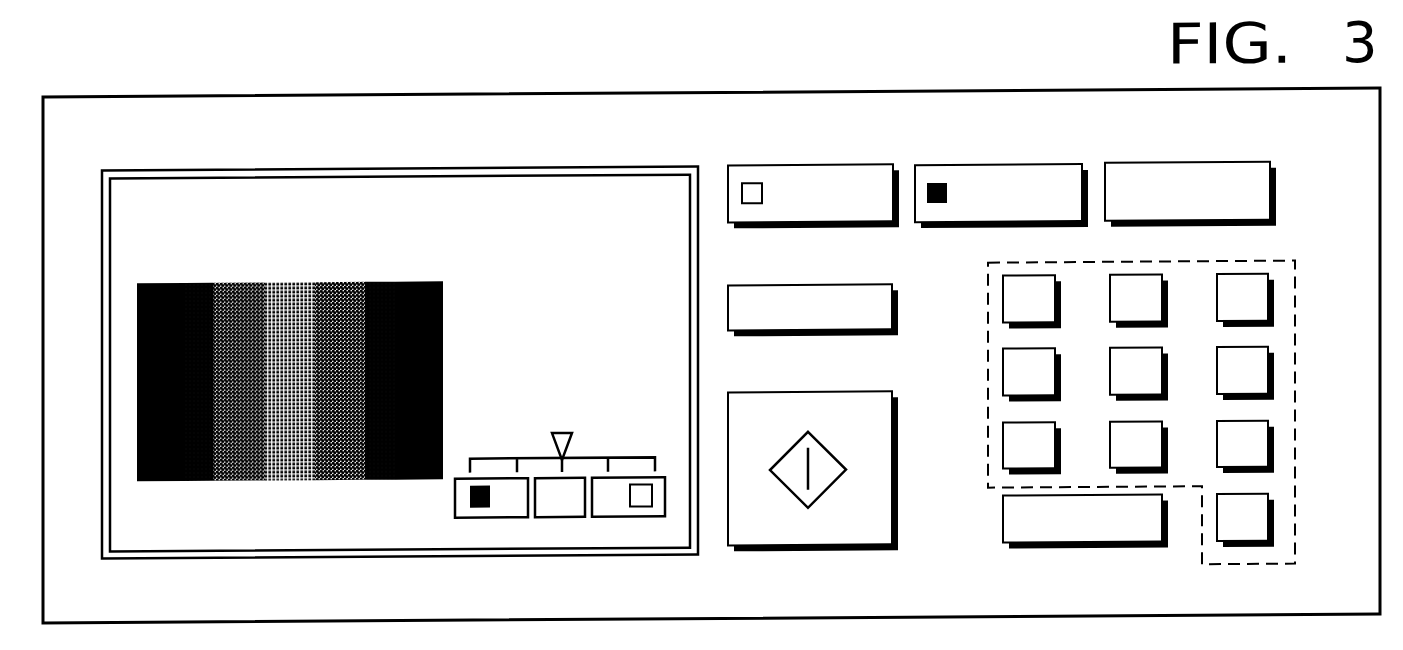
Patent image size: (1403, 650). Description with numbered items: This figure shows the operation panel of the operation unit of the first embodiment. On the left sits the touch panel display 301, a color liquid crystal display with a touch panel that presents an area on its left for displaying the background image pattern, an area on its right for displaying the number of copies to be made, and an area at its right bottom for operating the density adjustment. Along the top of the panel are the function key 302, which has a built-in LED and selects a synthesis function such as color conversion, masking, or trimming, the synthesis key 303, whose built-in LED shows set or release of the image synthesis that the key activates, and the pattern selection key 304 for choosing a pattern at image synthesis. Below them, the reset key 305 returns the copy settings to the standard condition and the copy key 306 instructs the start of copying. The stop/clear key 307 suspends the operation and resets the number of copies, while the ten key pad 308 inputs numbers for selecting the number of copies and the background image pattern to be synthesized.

The touch panel display 301 is at (352, 169).
The function key 302 is at (810, 167).
The synthesis key 303 is at (1000, 168).
The pattern selection key 304 is at (1180, 168).
The reset key 305 is at (855, 287).
The copy key 306 is at (860, 395).
The stop/clear key 307 is at (1003, 525).
The ten key pad 308 is at (1294, 320).